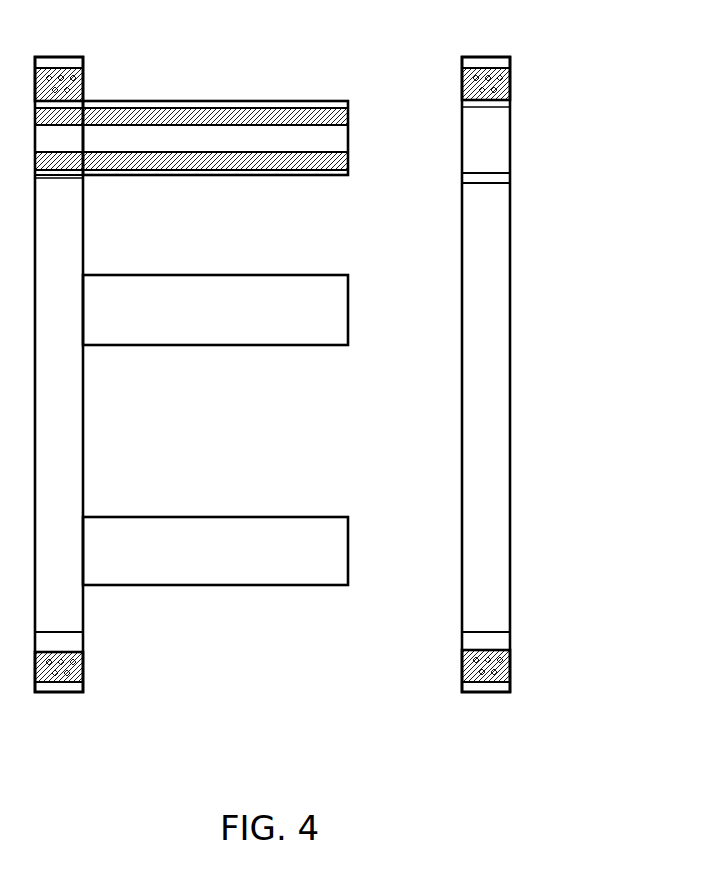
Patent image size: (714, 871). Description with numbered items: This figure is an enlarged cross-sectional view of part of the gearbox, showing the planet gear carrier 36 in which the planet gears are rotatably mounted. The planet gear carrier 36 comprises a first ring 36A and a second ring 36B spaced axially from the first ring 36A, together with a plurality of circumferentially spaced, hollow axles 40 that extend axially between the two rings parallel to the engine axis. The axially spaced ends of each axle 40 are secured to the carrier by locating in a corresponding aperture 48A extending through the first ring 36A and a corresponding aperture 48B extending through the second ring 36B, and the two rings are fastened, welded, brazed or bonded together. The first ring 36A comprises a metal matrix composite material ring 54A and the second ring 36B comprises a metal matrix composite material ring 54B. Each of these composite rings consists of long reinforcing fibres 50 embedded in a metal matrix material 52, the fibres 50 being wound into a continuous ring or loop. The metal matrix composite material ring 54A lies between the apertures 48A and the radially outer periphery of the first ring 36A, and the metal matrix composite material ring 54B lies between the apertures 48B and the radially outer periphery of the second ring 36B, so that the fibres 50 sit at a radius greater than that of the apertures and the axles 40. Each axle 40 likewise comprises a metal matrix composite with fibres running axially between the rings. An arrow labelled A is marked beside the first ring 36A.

The planet gear carrier 36 is at (542, 348).
The first ring 36A is at (511, 190).
The second ring 36B is at (84, 632).
The axle 40 is at (252, 175).
The aperture 48A is at (511, 183).
The aperture 48B is at (84, 179).
The long reinforcing fibres 50 is at (67, 74).
The metal matrix material 52 is at (84, 80).
The metal matrix composite material ring 54A is at (447, 670).
The metal matrix composite material ring 54B is at (88, 682).
The viewing direction A is at (578, 280).